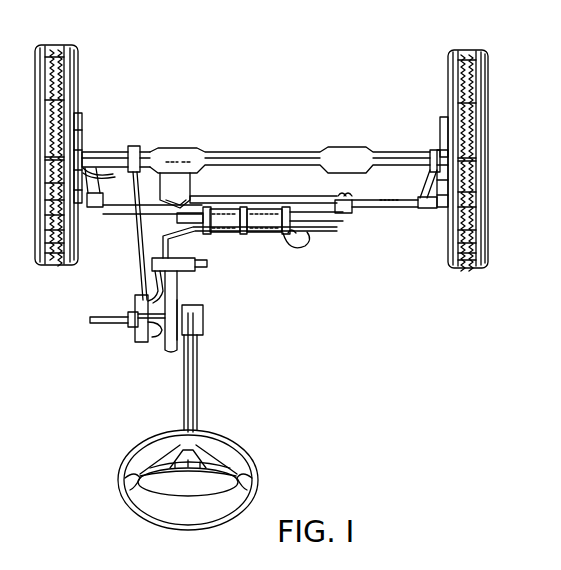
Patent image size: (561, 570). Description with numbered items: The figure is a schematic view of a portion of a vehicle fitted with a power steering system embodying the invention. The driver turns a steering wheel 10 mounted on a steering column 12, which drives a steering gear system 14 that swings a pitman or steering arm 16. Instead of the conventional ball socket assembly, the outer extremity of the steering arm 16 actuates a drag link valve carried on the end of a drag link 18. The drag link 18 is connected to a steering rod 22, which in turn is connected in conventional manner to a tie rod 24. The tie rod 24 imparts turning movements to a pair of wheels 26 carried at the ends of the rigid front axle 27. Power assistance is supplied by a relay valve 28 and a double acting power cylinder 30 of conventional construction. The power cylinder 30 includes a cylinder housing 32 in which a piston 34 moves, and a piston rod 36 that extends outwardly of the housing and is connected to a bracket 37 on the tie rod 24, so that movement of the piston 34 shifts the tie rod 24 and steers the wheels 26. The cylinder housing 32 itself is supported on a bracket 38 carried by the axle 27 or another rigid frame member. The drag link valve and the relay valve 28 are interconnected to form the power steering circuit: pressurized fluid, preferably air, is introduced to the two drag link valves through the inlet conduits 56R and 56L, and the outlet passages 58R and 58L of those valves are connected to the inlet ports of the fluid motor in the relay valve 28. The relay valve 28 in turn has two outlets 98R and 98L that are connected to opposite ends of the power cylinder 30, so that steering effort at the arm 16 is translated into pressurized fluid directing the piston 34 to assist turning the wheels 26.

The steering wheel 10 is at (256, 476).
The steering column 12 is at (198, 378).
The steering gear system 14 is at (203, 321).
The steering arm 16 is at (141, 341).
The drag link 18 is at (137, 252).
The steering rod 22 is at (114, 173).
The tie rod 24 is at (394, 209).
The wheels 26 is at (55, 52).
The rigid front axle 27 is at (254, 158).
The relay valve 28 is at (208, 264).
The double acting power cylinder 30 is at (294, 236).
The cylinder housing 32 is at (219, 208).
The piston 34 is at (246, 206).
The piston rod 36 is at (267, 212).
The bracket 37 is at (345, 200).
The bracket 38 is at (169, 181).
The inlet conduit 56L is at (127, 318).
The inlet conduit 56R is at (128, 327).
The outlet passage 58L is at (150, 289).
The outlet passage 58R is at (185, 282).
The outlet 98L is at (158, 229).
The outlet 98R is at (305, 242).